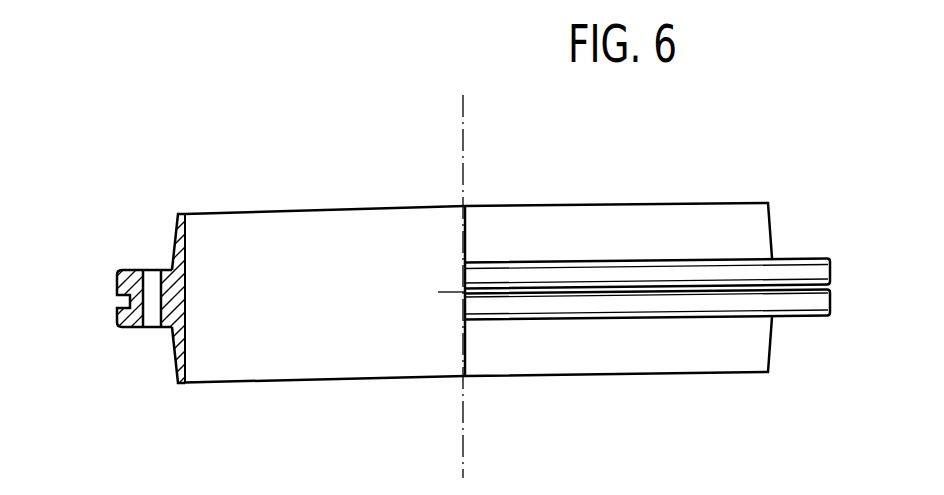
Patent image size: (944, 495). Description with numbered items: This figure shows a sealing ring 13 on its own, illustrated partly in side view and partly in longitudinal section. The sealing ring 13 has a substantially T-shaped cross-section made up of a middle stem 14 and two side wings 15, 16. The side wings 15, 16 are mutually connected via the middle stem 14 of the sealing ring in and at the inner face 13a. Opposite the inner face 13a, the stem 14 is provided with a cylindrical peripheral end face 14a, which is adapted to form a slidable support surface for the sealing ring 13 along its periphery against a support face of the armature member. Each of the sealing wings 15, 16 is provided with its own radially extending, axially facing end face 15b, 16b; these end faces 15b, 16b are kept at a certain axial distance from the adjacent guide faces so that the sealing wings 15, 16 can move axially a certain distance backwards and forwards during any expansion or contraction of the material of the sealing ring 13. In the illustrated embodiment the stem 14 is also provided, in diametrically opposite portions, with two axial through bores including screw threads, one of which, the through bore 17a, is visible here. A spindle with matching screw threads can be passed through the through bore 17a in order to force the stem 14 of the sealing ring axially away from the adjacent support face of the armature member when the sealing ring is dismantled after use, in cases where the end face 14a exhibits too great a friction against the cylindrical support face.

The sealing ring 13 is at (626, 199).
The inner face 13a is at (345, 296).
The middle stem 14 is at (128, 311).
The end face 14a is at (116, 282).
The side wing 15 is at (187, 235).
The end face 15b is at (179, 213).
The side wing 16 is at (185, 355).
The end face 16b is at (178, 383).
The axial through bore 17a is at (152, 297).